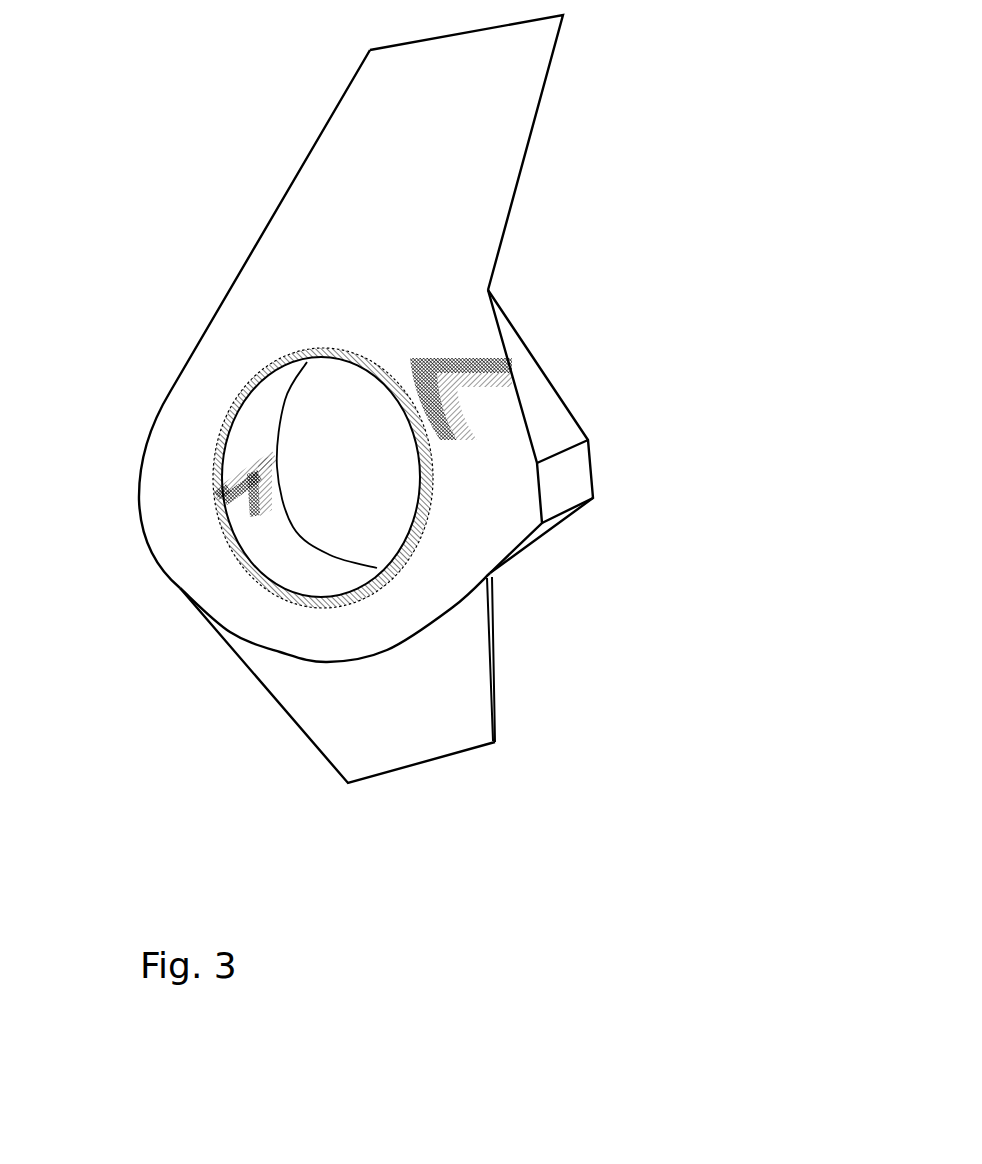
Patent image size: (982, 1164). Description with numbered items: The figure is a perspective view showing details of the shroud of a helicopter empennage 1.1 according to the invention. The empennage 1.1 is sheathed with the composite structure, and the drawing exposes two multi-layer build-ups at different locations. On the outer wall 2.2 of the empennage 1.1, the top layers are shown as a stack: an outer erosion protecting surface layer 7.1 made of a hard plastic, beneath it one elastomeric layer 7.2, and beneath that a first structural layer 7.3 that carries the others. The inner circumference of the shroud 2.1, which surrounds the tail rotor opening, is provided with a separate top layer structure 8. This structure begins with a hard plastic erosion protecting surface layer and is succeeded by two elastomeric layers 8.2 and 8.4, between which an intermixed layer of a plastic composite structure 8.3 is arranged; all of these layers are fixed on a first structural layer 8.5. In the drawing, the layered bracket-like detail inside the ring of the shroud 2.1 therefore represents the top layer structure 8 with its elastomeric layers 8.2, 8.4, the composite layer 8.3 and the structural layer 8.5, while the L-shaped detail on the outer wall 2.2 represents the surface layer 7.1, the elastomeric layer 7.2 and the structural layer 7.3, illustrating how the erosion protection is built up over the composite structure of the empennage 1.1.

The empennage 1.1 is at (232, 251).
The shroud 2.1 is at (413, 548).
The outer wall 2.2 is at (507, 515).
The outer erosion protecting surface layer 7.1 is at (629, 377).
The elastomeric layer 7.2 is at (500, 380).
The first structural layer 7.3 is at (512, 367).
The top layer structure 8 is at (206, 512).
The elastomeric layer 8.2 is at (250, 517).
The intermixed layer of a plastic composite structure 8.3 is at (213, 503).
The elastomeric layer 8.4 is at (268, 468).
The first structural layer 8.5 is at (227, 477).